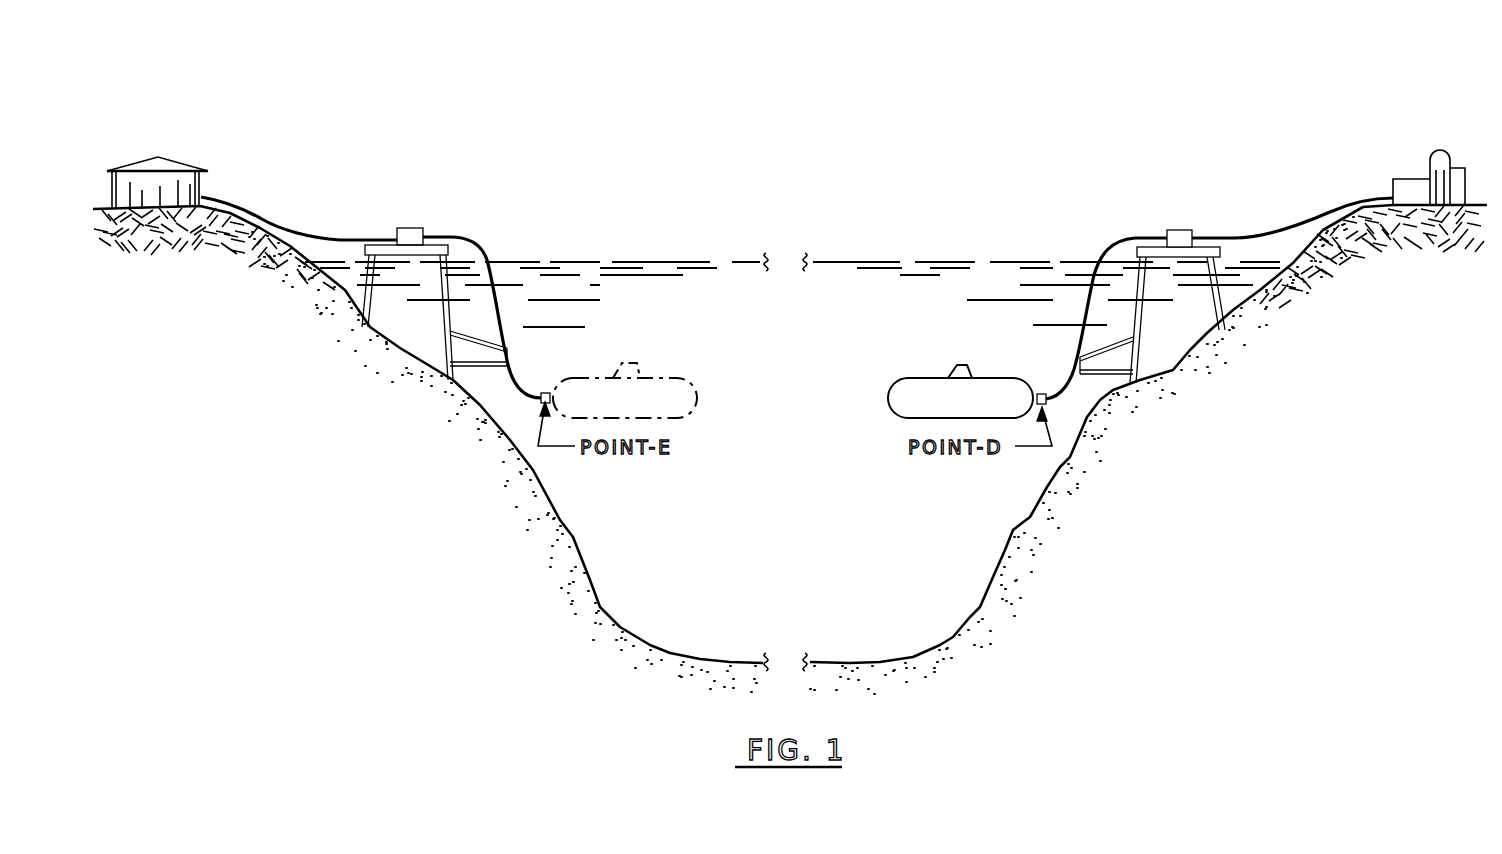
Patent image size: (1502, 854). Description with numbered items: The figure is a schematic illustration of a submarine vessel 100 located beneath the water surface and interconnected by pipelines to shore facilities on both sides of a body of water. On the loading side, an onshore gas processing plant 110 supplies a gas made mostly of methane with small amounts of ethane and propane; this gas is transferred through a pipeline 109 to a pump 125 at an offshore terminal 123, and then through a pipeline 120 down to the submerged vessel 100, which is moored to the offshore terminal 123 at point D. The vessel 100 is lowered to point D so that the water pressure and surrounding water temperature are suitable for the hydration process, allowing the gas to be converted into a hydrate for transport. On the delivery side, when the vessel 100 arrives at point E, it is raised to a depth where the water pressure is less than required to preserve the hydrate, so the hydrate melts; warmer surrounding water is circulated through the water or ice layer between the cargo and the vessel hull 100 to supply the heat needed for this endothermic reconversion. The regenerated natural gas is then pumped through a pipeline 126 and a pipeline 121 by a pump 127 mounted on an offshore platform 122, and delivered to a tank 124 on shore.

The submarine vessel 100 is at (668, 378).
The pipeline 109 is at (1270, 233).
The onshore gas processing plant 110 is at (1440, 155).
The pipeline 120 is at (1115, 247).
The pipeline 121 is at (323, 233).
The offshore platform 122 is at (437, 248).
The offshore terminal 123 is at (1153, 250).
The tank 124 is at (173, 162).
The pump 125 is at (1180, 237).
The pipeline 126 is at (480, 247).
The pump 127 is at (412, 230).